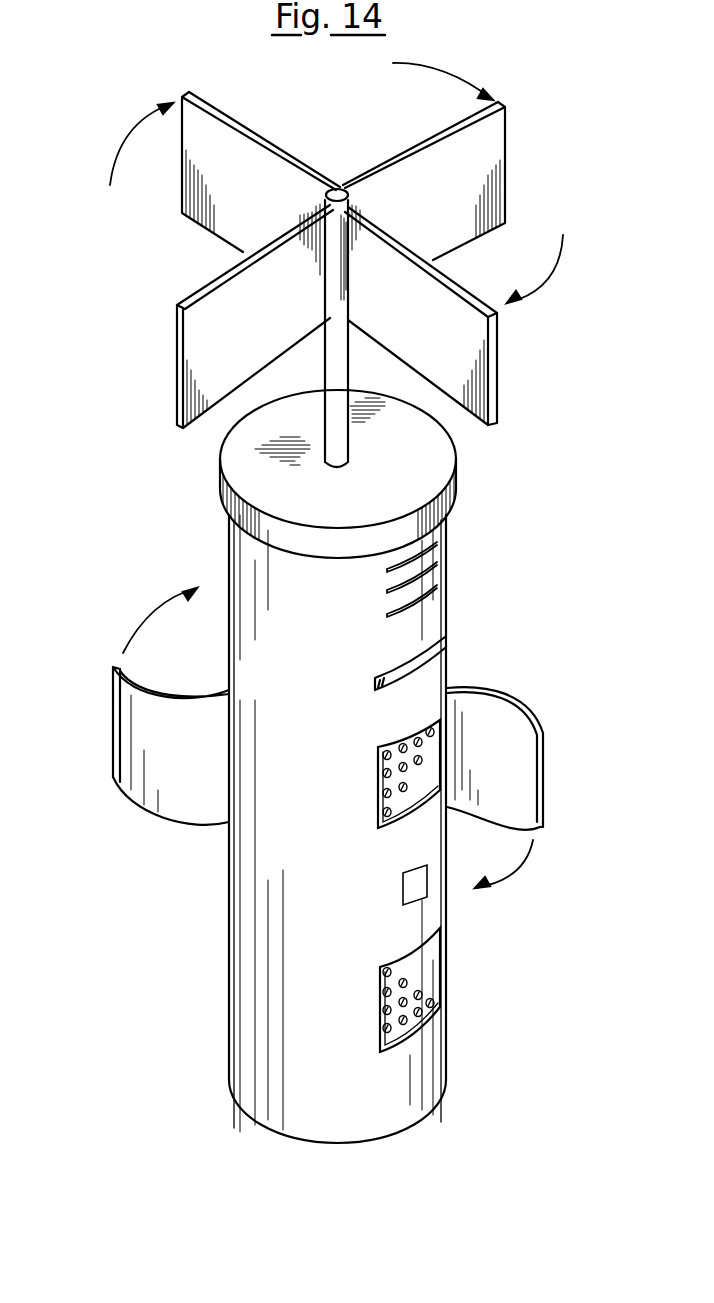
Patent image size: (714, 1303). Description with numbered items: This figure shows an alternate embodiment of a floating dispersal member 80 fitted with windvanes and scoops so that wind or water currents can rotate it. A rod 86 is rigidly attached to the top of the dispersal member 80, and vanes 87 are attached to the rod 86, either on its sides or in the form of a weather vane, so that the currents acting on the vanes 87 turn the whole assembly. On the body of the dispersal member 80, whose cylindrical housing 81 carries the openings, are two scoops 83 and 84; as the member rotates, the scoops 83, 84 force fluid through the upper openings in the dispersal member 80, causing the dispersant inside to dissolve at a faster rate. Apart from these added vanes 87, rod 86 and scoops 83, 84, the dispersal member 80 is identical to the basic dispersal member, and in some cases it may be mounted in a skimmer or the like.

The dispersal member 80 is at (470, 577).
The cylindrical housing 81 is at (447, 1055).
The scoop 83 is at (112, 745).
The scoop 84 is at (545, 783).
The rod 86 is at (327, 347).
The vanes 87 is at (177, 357).